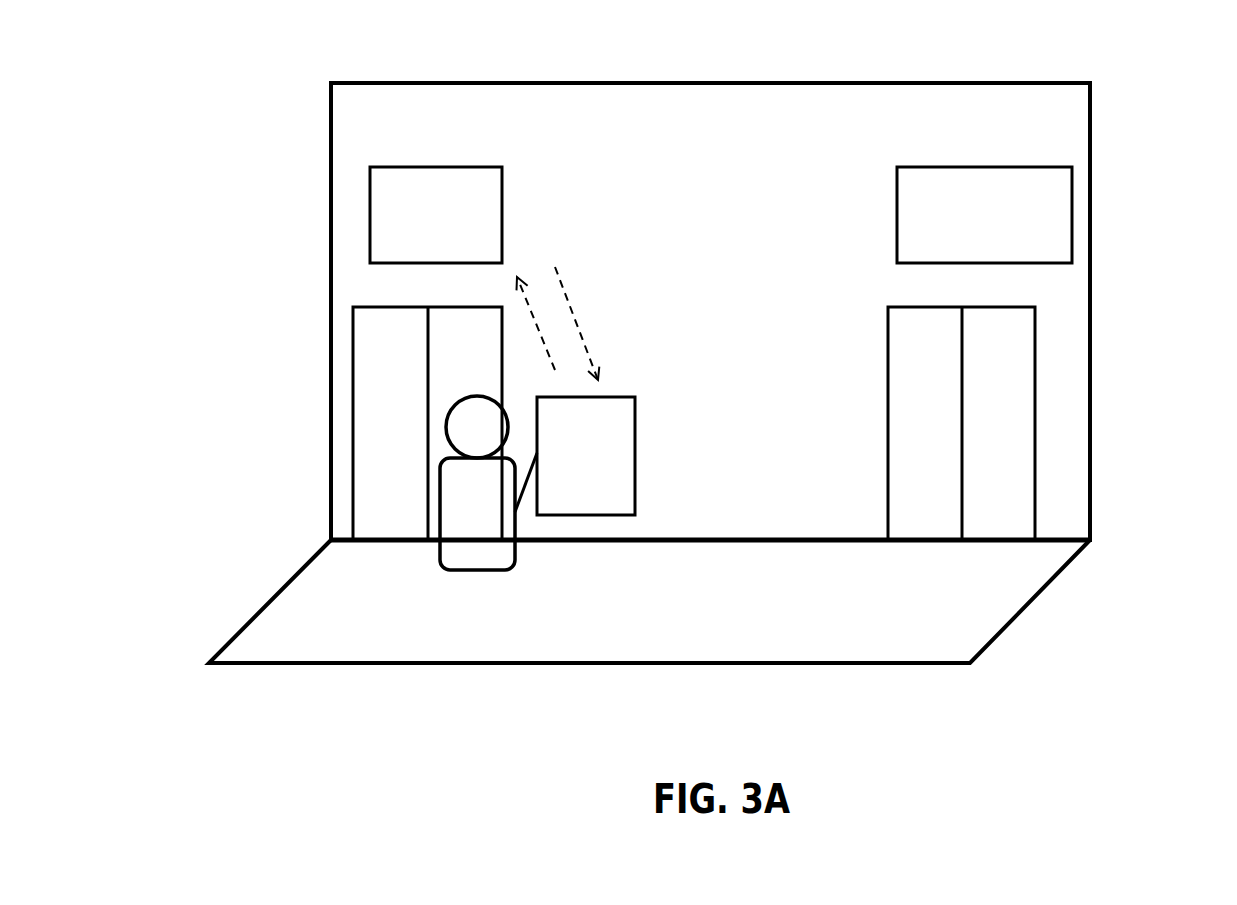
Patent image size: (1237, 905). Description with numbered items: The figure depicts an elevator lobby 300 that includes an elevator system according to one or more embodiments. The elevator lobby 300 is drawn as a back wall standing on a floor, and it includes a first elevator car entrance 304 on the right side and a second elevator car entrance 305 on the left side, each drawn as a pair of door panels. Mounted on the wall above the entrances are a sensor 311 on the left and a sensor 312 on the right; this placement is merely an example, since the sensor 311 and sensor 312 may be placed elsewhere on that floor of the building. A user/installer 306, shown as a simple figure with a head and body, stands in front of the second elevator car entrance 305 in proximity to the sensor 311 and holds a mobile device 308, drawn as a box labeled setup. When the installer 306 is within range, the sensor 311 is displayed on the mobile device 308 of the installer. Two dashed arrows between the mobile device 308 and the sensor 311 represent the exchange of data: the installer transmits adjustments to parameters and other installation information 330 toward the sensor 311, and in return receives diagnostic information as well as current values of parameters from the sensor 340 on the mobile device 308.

The elevator lobby 300 is at (310, 130).
The first elevator car entrance 304 is at (998, 307).
The second elevator car entrance 305 is at (393, 307).
The user/installer 306 is at (475, 397).
The mobile device 308 is at (635, 495).
The sensor 311 is at (502, 214).
The sensor 312 is at (897, 214).
The installation information 330 is at (510, 322).
The diagnostic information and current parameter values 340 is at (587, 323).